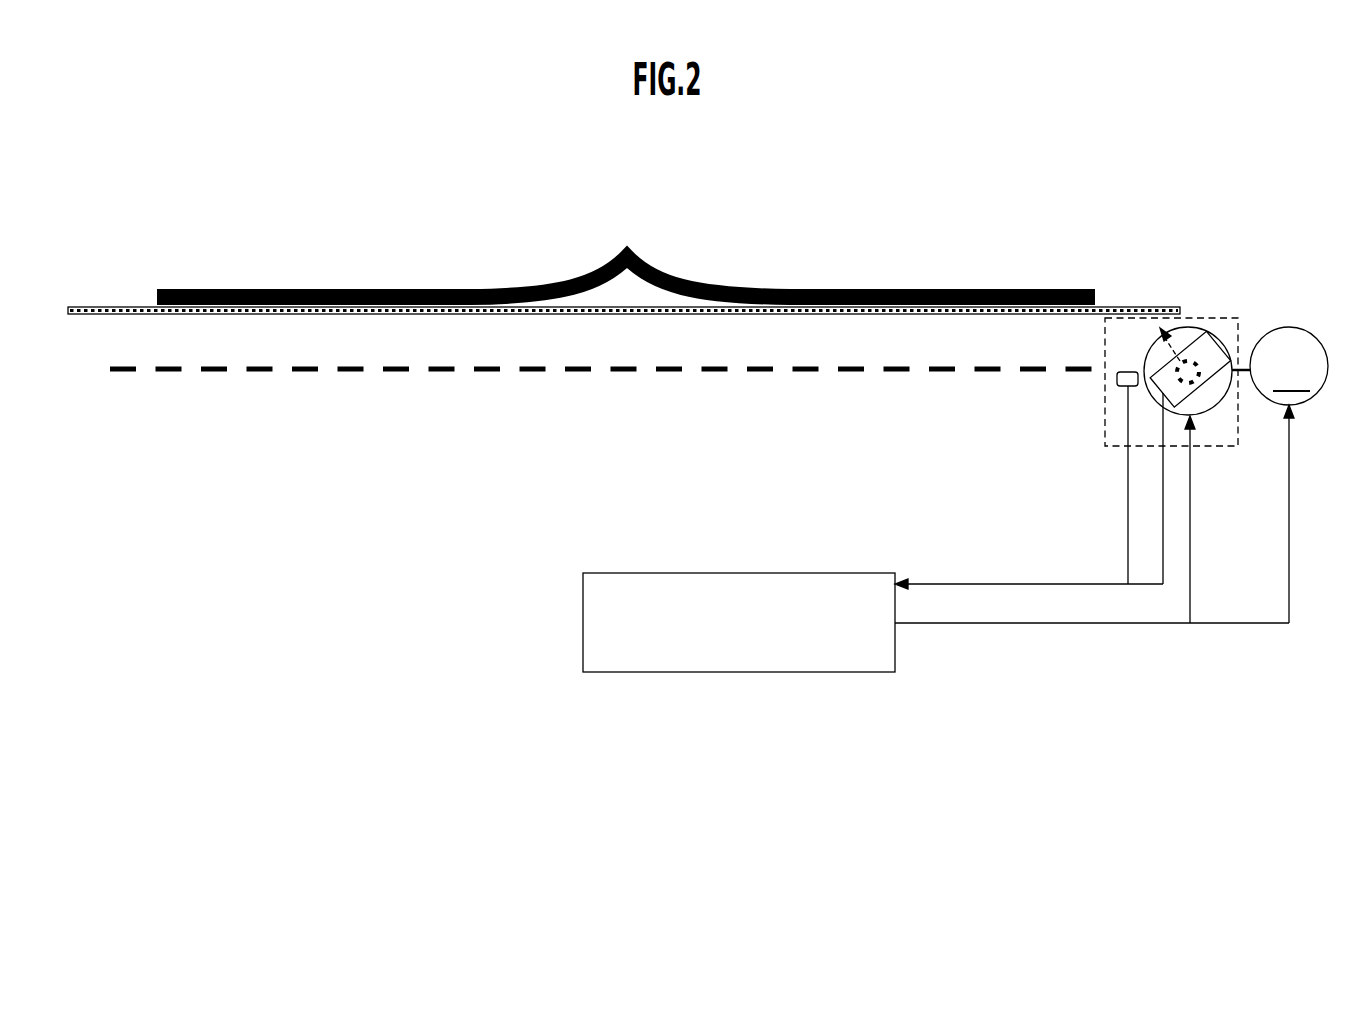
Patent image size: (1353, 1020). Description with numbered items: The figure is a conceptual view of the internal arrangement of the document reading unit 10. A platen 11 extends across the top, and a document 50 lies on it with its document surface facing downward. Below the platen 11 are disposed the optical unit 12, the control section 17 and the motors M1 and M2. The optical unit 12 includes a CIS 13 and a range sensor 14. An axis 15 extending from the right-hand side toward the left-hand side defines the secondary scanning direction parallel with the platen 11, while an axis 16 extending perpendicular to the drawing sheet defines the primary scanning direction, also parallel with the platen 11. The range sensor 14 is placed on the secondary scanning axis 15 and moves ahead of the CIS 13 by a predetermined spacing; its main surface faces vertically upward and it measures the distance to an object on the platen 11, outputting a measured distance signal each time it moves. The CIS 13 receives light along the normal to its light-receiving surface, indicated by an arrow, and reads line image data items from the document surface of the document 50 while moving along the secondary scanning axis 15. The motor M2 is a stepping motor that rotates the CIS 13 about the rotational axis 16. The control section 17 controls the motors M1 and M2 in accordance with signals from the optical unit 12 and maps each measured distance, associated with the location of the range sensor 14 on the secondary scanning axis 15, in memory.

The document reading unit 10 is at (1138, 287).
The platen 11 is at (1167, 308).
The optical unit 12 is at (1210, 329).
The CIS 13 is at (1229, 392).
The range sensor 14 is at (1117, 387).
The secondary scanning axis 15 is at (283, 376).
The rotational axis 16 is at (1202, 362).
The control section 17 is at (840, 573).
The document 50 is at (628, 251).
The motor M1 is at (1289, 475).
The motor M2 is at (1200, 414).